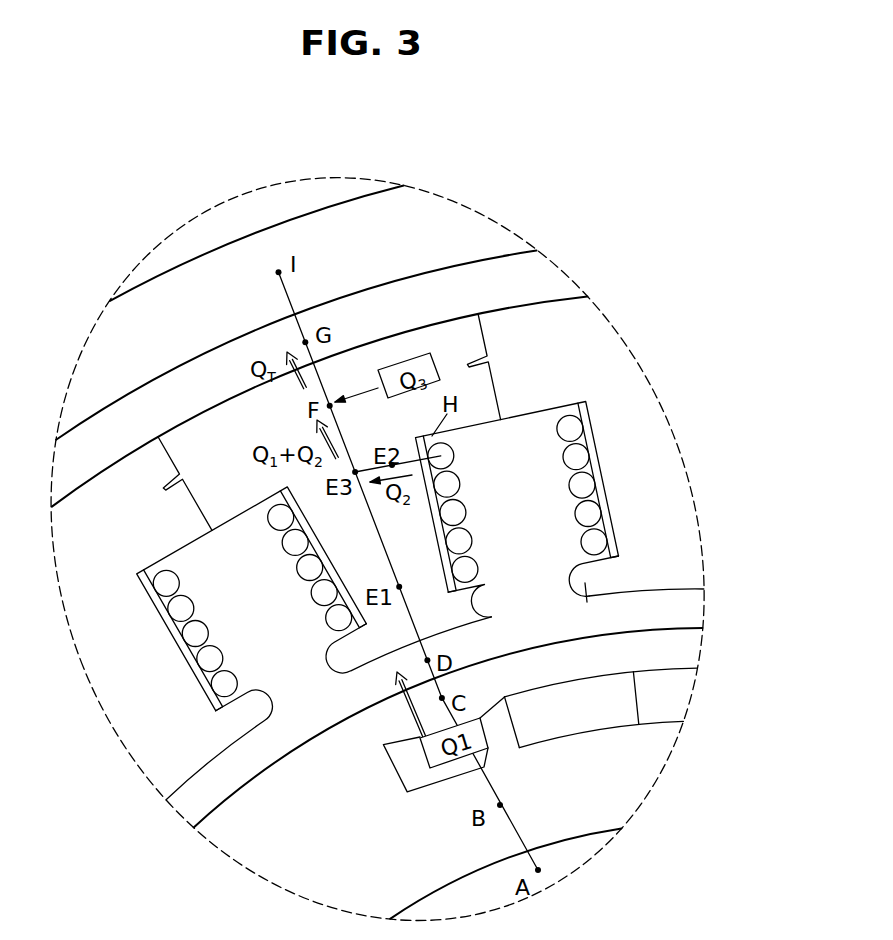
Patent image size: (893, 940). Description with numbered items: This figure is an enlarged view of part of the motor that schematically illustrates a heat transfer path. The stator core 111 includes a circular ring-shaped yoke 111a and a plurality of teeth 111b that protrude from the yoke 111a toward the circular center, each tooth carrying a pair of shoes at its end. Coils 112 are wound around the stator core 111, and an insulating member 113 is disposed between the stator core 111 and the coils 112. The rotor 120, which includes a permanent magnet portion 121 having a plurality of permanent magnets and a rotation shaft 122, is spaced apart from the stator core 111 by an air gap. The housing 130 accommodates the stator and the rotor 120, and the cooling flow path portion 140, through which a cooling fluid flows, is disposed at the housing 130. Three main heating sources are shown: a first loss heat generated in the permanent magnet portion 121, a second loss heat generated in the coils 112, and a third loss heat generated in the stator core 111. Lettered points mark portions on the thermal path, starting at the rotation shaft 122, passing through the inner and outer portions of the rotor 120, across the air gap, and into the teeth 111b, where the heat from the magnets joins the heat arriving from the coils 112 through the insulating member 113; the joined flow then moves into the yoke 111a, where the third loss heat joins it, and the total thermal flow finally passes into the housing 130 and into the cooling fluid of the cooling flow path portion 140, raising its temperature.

The cooling flow path portion 140 is at (462, 223).
The housing 130 is at (547, 278).
The stator core 111 is at (703, 297).
The yoke 111a is at (607, 345).
The teeth 111b is at (657, 444).
The coils 112 is at (600, 511).
The insulating member 113 is at (615, 543).
The rotor 120 is at (690, 647).
The permanent magnet portion 121 is at (678, 700).
The rotation shaft 122 is at (579, 856).